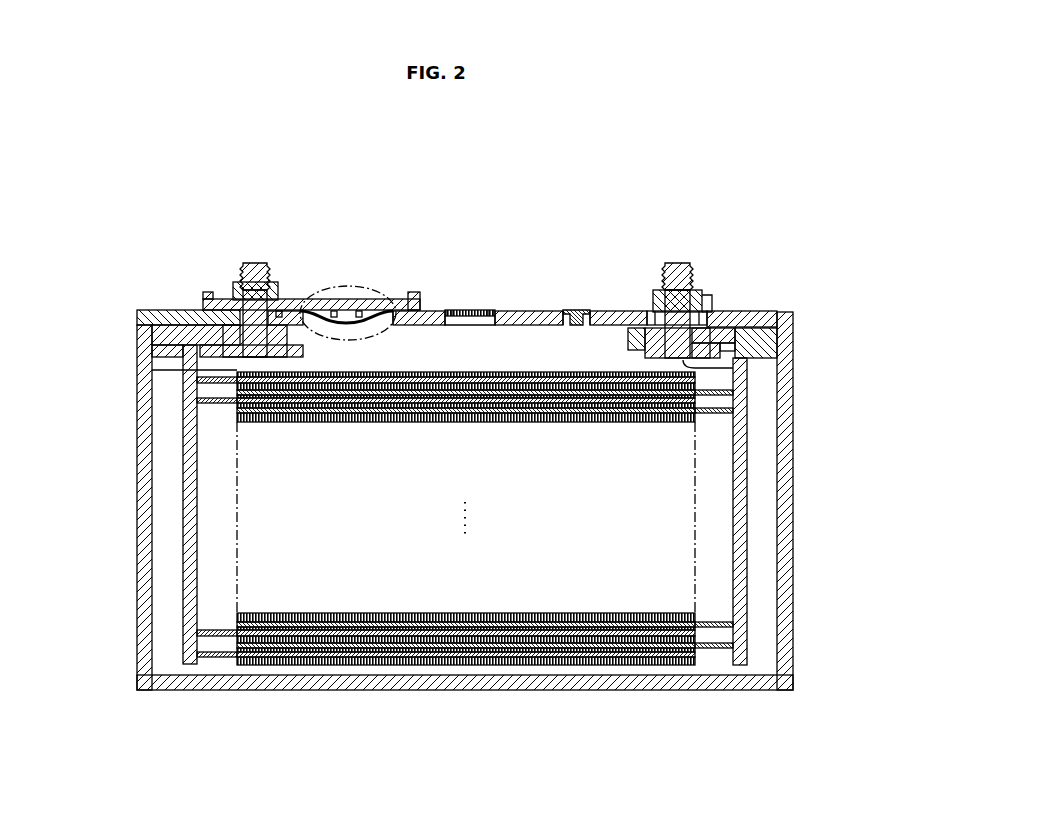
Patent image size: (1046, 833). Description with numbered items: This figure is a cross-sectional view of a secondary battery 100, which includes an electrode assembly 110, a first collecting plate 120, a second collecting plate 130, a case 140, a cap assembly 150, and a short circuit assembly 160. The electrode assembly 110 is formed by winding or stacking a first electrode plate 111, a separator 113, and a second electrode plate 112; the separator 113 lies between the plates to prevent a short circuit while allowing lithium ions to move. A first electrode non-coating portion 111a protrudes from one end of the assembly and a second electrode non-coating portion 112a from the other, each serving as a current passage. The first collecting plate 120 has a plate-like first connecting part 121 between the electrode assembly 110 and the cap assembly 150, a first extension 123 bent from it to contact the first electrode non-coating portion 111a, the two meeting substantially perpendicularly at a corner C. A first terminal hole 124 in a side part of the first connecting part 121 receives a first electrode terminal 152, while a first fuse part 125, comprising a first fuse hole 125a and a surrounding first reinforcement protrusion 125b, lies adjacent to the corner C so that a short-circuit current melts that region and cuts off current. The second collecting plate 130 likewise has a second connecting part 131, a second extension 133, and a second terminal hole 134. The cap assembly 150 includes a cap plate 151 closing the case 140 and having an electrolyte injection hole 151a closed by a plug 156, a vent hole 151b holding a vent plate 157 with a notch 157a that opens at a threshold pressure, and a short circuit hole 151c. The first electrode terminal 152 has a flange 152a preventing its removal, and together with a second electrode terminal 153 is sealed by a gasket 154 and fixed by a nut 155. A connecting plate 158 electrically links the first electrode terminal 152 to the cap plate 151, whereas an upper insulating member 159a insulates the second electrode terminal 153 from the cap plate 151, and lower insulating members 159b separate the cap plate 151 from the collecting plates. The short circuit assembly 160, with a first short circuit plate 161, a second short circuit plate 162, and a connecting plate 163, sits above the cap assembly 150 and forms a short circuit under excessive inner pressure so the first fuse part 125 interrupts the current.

The secondary battery 100 is at (760, 186).
The electrode assembly 110 is at (468, 558).
The first electrode plate 111 is at (488, 567).
The first electrode non-coating portion 111a is at (718, 648).
The second electrode plate 112 is at (446, 561).
The second electrode non-coating portion 112a is at (225, 657).
The separator 113 is at (480, 658).
The first collecting plate 120 is at (774, 442).
The first connecting part 121 is at (712, 318).
The first extension 123 is at (742, 524).
The first terminal hole 124 is at (705, 368).
The first fuse part 125 is at (760, 294).
The first fuse hole 125a is at (750, 345).
The first reinforcement protrusion 125b is at (712, 340).
The second collecting plate 130 is at (152, 460).
The second connecting part 131 is at (197, 333).
The second extension 133 is at (190, 539).
The second terminal hole 134 is at (160, 370).
The case 140 is at (785, 418).
The cap assembly 150 is at (460, 268).
The cap plate 151 is at (457, 294).
The electrolyte injection hole 151a is at (575, 327).
The vent hole 151b is at (465, 327).
The short circuit hole 151c is at (400, 311).
The first electrode terminal 152 is at (640, 283).
The flange 152a is at (636, 339).
The second electrode terminal 153 is at (255, 264).
The gasket 154 is at (232, 299).
The nut 155 is at (275, 283).
The plug 156 is at (578, 310).
The vent plate 157 is at (473, 287).
The notch 157a is at (456, 310).
The connecting plate 158 is at (704, 299).
The upper insulating member 159a is at (418, 299).
The lower insulating member 159b is at (148, 337).
The short circuit assembly 160 is at (336, 284).
The first short circuit plate 161 is at (340, 322).
The second short circuit plate 162 is at (345, 326).
The connecting plate 163 is at (300, 310).
The corner C is at (790, 334).